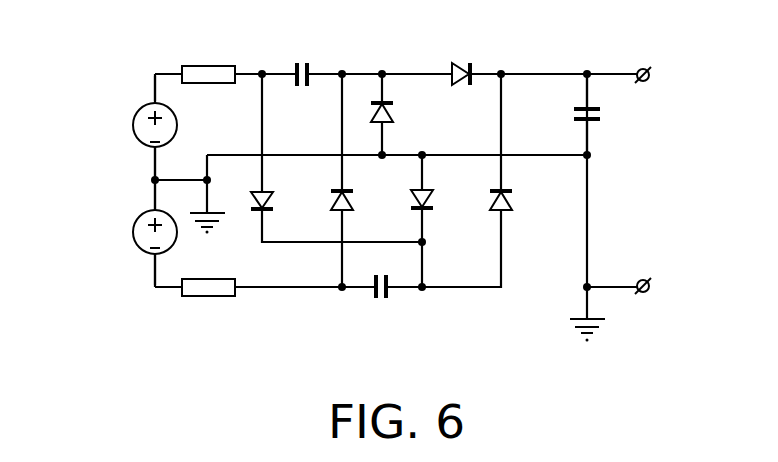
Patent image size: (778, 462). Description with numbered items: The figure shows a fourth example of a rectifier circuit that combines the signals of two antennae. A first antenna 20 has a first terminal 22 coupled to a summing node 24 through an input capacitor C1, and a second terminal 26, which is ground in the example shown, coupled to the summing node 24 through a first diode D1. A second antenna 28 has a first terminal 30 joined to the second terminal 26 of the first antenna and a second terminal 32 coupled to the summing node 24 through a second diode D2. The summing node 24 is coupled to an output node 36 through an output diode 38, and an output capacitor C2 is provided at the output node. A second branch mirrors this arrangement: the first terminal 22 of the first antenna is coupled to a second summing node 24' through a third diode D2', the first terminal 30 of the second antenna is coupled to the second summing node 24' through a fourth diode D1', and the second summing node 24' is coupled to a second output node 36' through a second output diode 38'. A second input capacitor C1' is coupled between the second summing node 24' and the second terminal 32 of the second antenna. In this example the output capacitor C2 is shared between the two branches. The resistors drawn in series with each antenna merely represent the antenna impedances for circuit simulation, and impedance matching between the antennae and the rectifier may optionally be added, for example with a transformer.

The first antenna 20 is at (133, 127).
The first terminal of the first antenna 22 is at (153, 95).
The summing node 24 is at (373, 48).
The second summing node 24' is at (454, 256).
The second terminal of the first antenna 26 is at (153, 160).
The second antenna 28 is at (133, 232).
The first terminal of the second antenna 30 is at (153, 202).
The second terminal of the second antenna 32 is at (153, 266).
The output node 36 is at (639, 51).
The second output node 36' is at (643, 286).
The output diode 38 is at (459, 49).
The second output diode 38' is at (533, 198).
The input capacitor C1 is at (303, 62).
The second input capacitor C1' is at (384, 300).
The output capacitor C2 is at (603, 114).
The first diode D1 is at (397, 114).
The fourth diode D1' is at (439, 201).
The second diode D2 is at (356, 202).
The third diode D2' is at (279, 203).